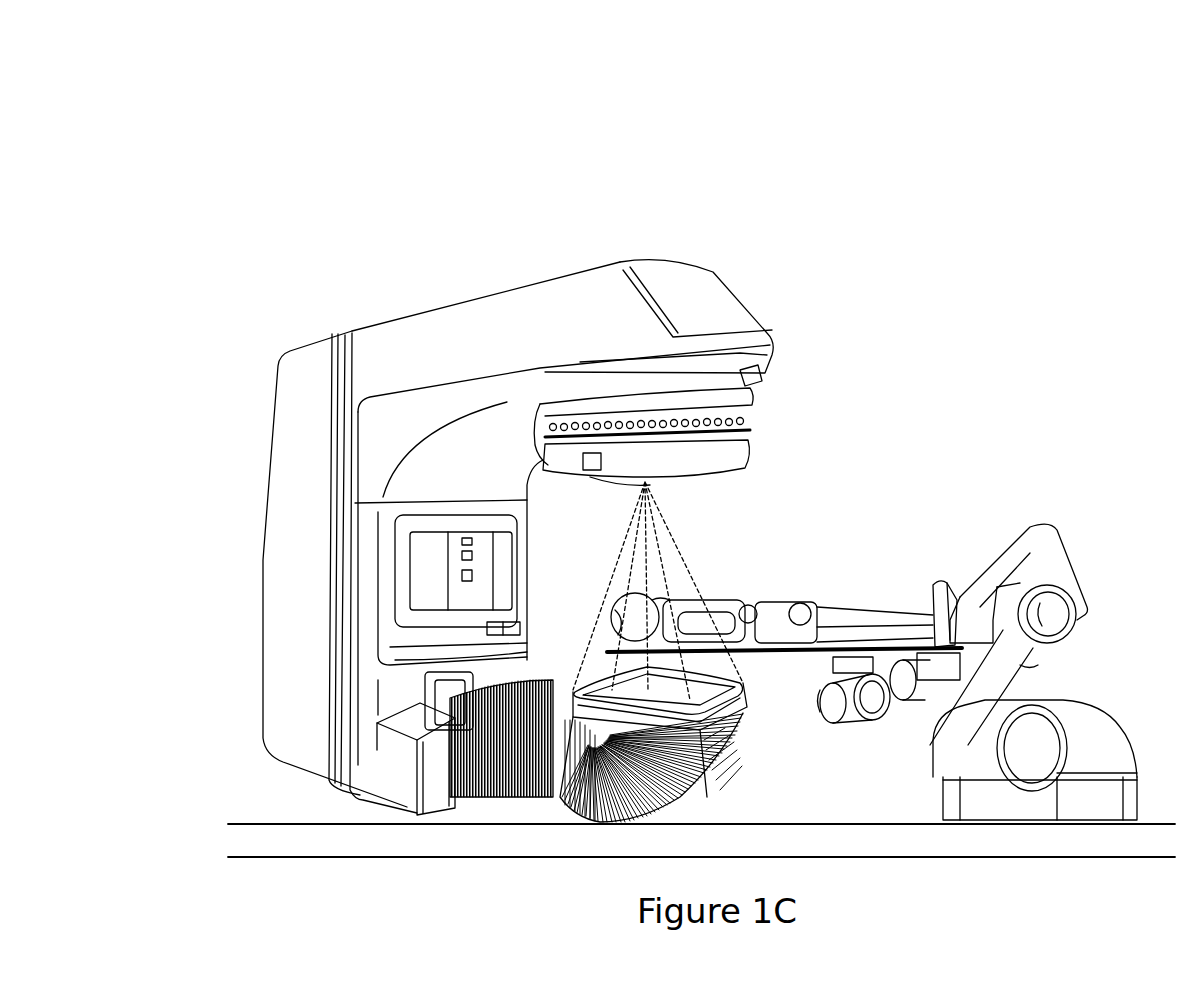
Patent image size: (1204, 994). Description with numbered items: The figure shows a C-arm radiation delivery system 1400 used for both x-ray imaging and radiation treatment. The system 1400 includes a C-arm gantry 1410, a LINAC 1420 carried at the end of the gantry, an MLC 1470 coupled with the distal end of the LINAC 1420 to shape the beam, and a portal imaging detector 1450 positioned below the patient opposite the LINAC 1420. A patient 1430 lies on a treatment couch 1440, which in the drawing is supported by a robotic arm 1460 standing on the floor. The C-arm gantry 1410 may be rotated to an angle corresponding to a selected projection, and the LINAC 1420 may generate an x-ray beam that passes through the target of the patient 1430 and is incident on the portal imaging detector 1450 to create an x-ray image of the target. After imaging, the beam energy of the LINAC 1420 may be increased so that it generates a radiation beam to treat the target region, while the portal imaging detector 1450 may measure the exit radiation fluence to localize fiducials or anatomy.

The C-arm radiation delivery system 1400 is at (706, 46).
The C-arm gantry 1410 is at (503, 293).
The LINAC 1420 is at (752, 422).
The patient 1430 is at (622, 596).
The treatment couch 1440 is at (613, 648).
The portal imaging detector 1450 is at (748, 690).
The robotic arm 1460 is at (1068, 545).
The MLC 1470 is at (650, 485).